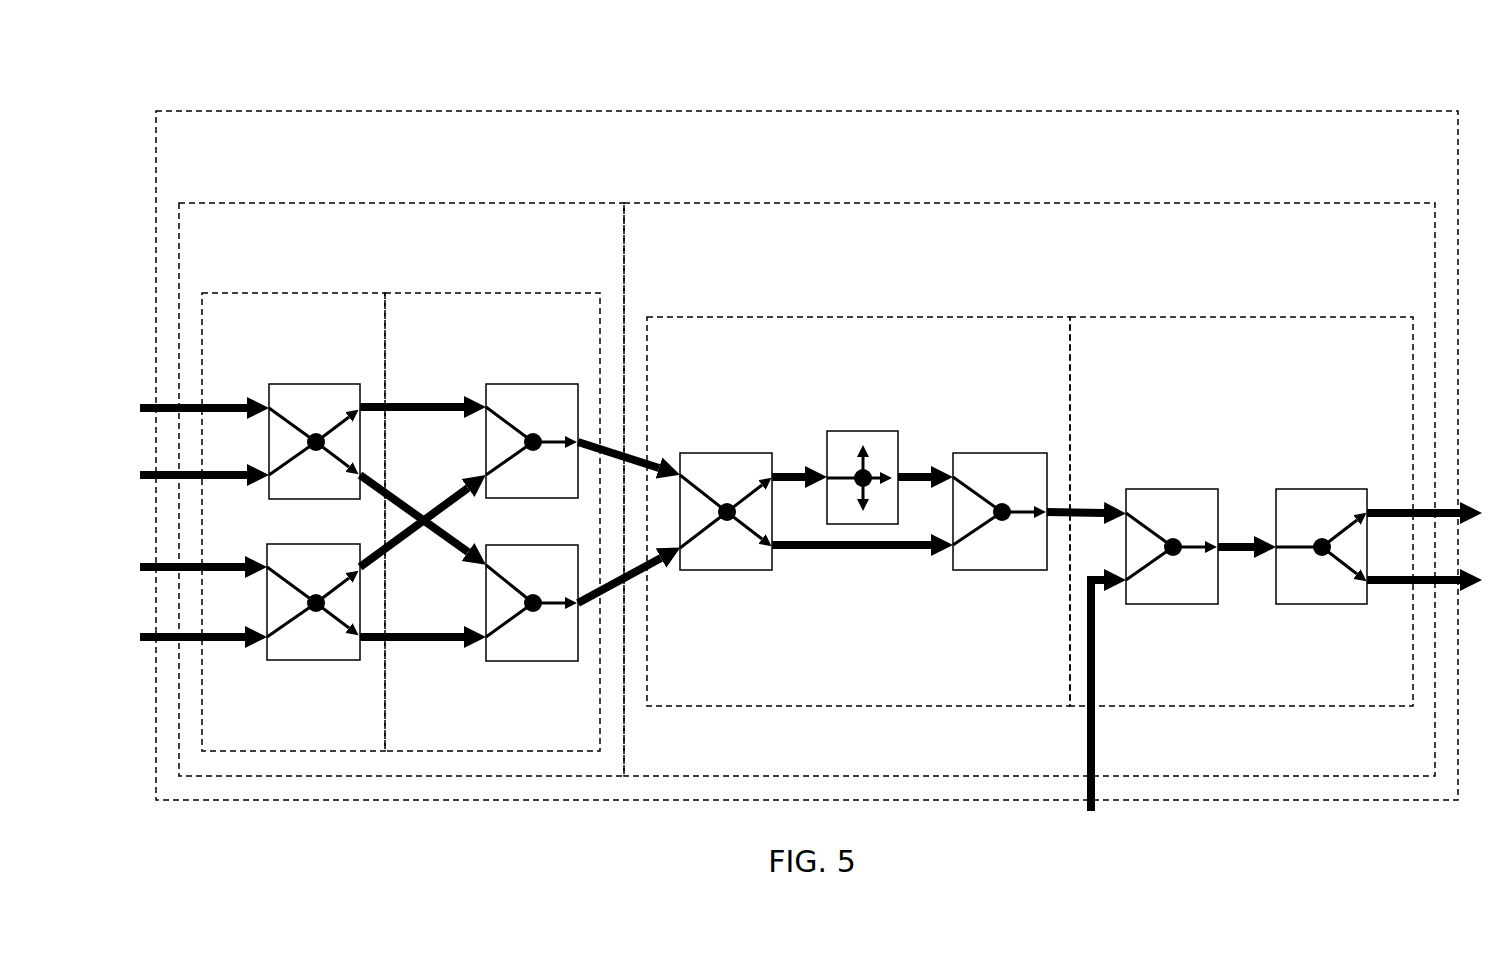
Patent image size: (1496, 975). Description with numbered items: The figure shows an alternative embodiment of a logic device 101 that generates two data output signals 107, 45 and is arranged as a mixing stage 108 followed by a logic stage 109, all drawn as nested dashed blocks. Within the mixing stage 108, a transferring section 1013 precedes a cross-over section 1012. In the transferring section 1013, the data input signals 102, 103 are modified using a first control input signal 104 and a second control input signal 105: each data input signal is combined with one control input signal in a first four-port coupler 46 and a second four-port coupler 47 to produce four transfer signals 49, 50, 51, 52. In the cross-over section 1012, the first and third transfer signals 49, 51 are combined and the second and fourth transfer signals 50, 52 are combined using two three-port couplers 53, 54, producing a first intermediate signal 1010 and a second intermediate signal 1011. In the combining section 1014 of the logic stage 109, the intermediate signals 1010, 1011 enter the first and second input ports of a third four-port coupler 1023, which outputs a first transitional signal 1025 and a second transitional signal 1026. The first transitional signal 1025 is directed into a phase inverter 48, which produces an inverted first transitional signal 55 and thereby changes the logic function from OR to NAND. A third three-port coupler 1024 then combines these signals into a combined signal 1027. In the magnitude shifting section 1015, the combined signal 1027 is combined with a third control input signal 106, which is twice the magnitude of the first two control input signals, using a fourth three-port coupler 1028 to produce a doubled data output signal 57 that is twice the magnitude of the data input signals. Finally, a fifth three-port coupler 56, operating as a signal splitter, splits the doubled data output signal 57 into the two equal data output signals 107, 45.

The device 101 is at (808, 111).
The mixing stage 108 is at (407, 203).
The logic stage 109 is at (1024, 203).
The transferring section 1013 is at (293, 293).
The cross-over section 1012 is at (475, 293).
The combining section 1014 is at (863, 317).
The magnitude shifting section 1015 is at (1242, 317).
The first 4-port coupler 46 is at (315, 384).
The second 4-port coupler 47 is at (313, 660).
The 3-port coupler 53 is at (533, 384).
The 3-port coupler 54 is at (529, 661).
The third 4-port coupler 1023 is at (727, 453).
The phase inverter 48 is at (863, 431).
The third 3-port coupler 1024 is at (1001, 453).
The fourth 3-port coupler 1028 is at (1173, 489).
The fifth 3-port coupler 56 is at (1320, 489).
The first control input signal 104 is at (236, 402).
The data input signal 102 is at (223, 470).
The second control input signal 105 is at (222, 573).
The data input signal 103 is at (232, 641).
The first transfer signal 49 is at (418, 402).
The second transfer signal 50 is at (405, 495).
The third transfer signal 51 is at (405, 548).
The fourth transfer signal 52 is at (415, 642).
The first intermediate signal 1010 is at (655, 458).
The second intermediate signal 1011 is at (655, 565).
The first transitional signal 1025 is at (794, 472).
The inverted first transitional signal 55 is at (919, 472).
The second transitional signal 1026 is at (850, 552).
The combined signal 1027 is at (1094, 505).
The third control input signal 106 is at (1095, 650).
The doubled data output signal 57 is at (1242, 538).
The data output signal 107 is at (1390, 517).
The data output signal 45 is at (1390, 580).